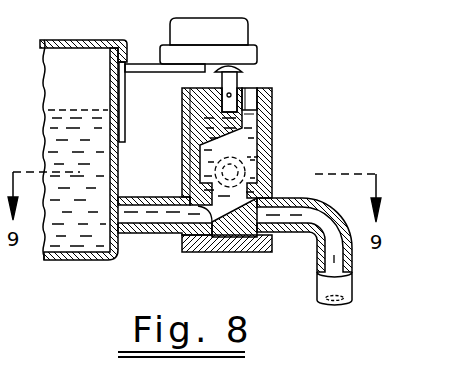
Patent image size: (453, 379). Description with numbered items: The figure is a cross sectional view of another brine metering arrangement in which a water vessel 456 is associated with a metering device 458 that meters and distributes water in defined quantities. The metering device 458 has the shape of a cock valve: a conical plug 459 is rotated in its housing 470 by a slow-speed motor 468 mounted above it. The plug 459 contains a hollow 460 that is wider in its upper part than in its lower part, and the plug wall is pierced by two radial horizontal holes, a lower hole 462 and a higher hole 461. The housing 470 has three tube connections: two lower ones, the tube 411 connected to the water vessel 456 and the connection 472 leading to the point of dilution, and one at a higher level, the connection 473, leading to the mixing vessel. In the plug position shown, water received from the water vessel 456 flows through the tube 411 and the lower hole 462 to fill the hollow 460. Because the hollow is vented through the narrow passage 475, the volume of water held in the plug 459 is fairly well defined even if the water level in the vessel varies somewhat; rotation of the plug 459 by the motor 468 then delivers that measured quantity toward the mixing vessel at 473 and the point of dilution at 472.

The tube connection to the water vessel 411 is at (170, 232).
The water vessel 456 is at (117, 158).
The metering device 458 is at (243, 252).
The conical plug 459 is at (262, 88).
The hollow 460 is at (240, 147).
The higher hole 461 is at (198, 174).
The lower hole 462 is at (210, 252).
The slow-speed motor 468 is at (244, 33).
The housing 470 is at (262, 138).
The tube connection to the point of dilution 472 is at (345, 281).
The connection to the mixing vessel 473 is at (275, 157).
The narrow passage 475 is at (274, 104).